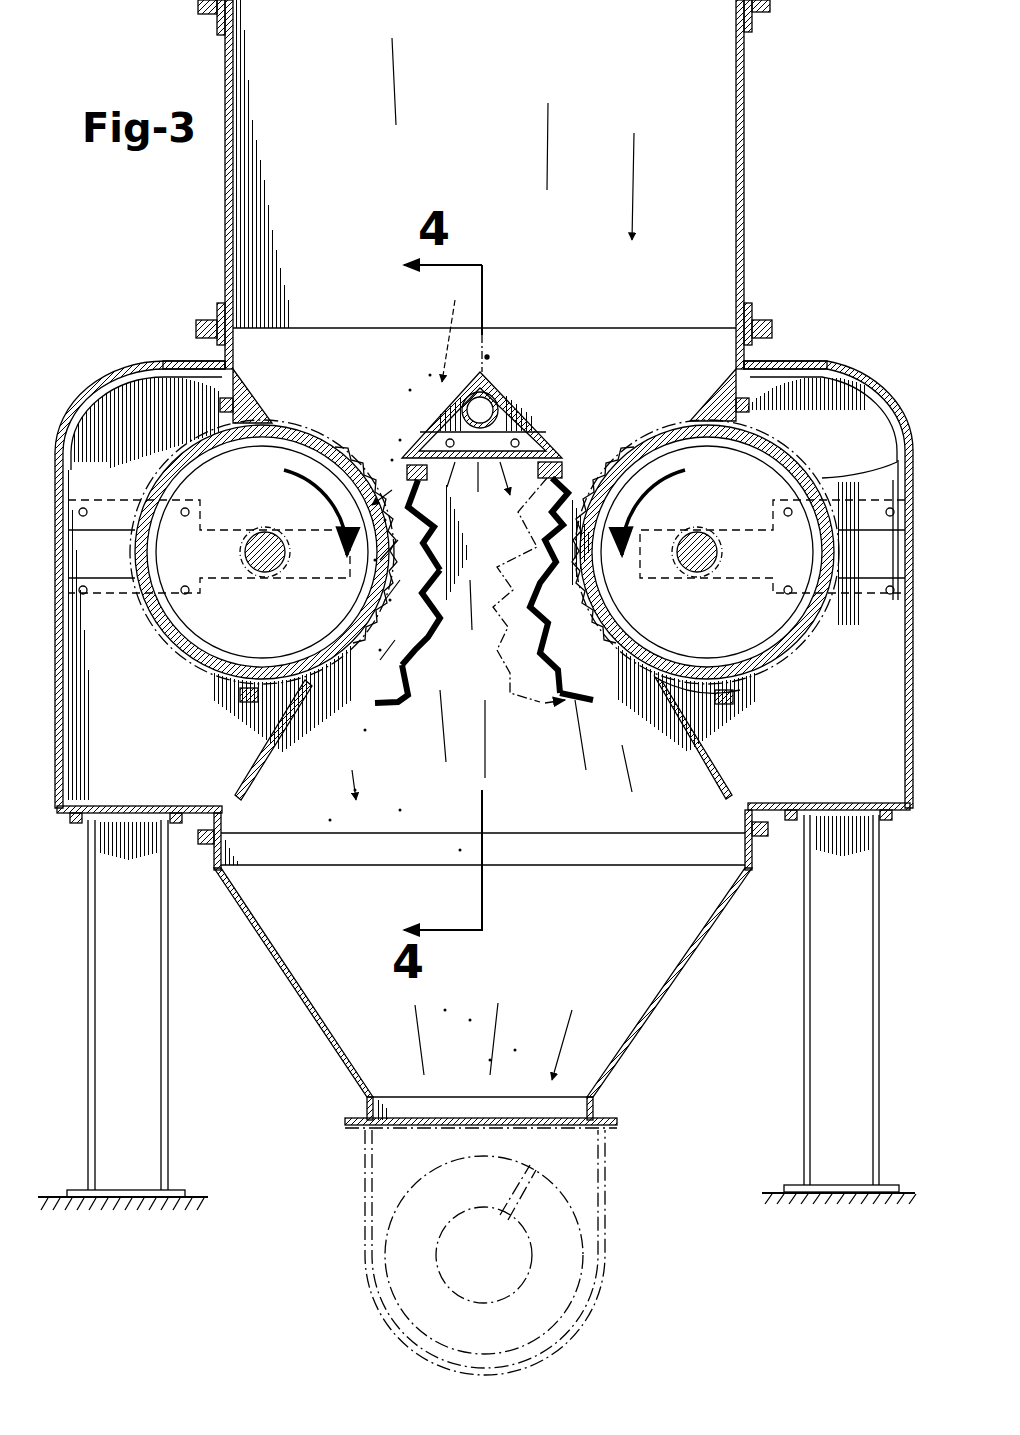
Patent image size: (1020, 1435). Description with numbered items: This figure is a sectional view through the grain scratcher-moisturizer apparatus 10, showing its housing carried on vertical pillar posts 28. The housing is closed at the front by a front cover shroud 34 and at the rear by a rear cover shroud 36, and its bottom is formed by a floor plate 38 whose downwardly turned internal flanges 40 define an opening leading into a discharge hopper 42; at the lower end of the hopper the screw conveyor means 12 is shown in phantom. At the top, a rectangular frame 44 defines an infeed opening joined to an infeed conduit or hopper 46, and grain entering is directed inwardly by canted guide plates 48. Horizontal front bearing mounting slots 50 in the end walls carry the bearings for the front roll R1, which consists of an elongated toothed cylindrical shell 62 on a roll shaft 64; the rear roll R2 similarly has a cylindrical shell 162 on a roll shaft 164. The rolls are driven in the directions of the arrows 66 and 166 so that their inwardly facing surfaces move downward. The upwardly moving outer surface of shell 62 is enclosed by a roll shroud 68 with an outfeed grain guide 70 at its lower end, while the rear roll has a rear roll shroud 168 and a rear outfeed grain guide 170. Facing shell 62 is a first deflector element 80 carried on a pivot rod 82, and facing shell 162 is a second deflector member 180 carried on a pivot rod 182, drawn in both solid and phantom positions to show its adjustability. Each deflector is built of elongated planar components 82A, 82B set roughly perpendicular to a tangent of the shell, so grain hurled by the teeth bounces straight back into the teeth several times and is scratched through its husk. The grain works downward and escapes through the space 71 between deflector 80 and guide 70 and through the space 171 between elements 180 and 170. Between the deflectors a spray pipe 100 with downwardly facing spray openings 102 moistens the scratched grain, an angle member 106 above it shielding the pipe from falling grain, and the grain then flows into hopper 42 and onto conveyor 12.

The grain scratcher-moisturizer apparatus 10 is at (75, 366).
The screw conveyor means 12 is at (605, 1262).
The vertical pillar posts 28 is at (170, 1053).
The front cover shroud 34 is at (57, 780).
The rear cover shroud 36 is at (910, 765).
The floor plate 38 is at (137, 806).
The downwardly turned internal flanges 40 is at (222, 818).
The discharge hopper 42 is at (655, 1003).
The rectangular frame 44 is at (235, 348).
The infeed conduit or hopper 46 is at (744, 152).
The canted guide plates 48 is at (257, 410).
The front bearing mounting slots 50 is at (113, 572).
The cylindrical shell 62 is at (318, 433).
The roll shaft 64 is at (292, 568).
The arrow 66 is at (318, 495).
The roll shroud 68 is at (257, 576).
The outfeed grain guide 70 is at (290, 762).
The space 71 is at (355, 690).
The first deflector element 80 is at (429, 577).
The pivot rod 82 is at (437, 544).
The planar component 82A is at (435, 512).
The planar component 82B is at (437, 546).
The spray pipe 100 is at (498, 392).
The spray openings 102 is at (503, 402).
The angle member 106 is at (488, 358).
The cylindrical shell 162 is at (655, 445).
The roll shaft 164 is at (694, 570).
The arrow 166 is at (705, 578).
The rear roll shroud 168 is at (905, 462).
The rear outfeed grain guide 170 is at (700, 760).
The space 171 is at (603, 695).
The second deflector member 180 is at (583, 712).
The pivot rod 182 is at (581, 591).
The front roll R1 is at (323, 412).
The rear roll R2 is at (668, 412).